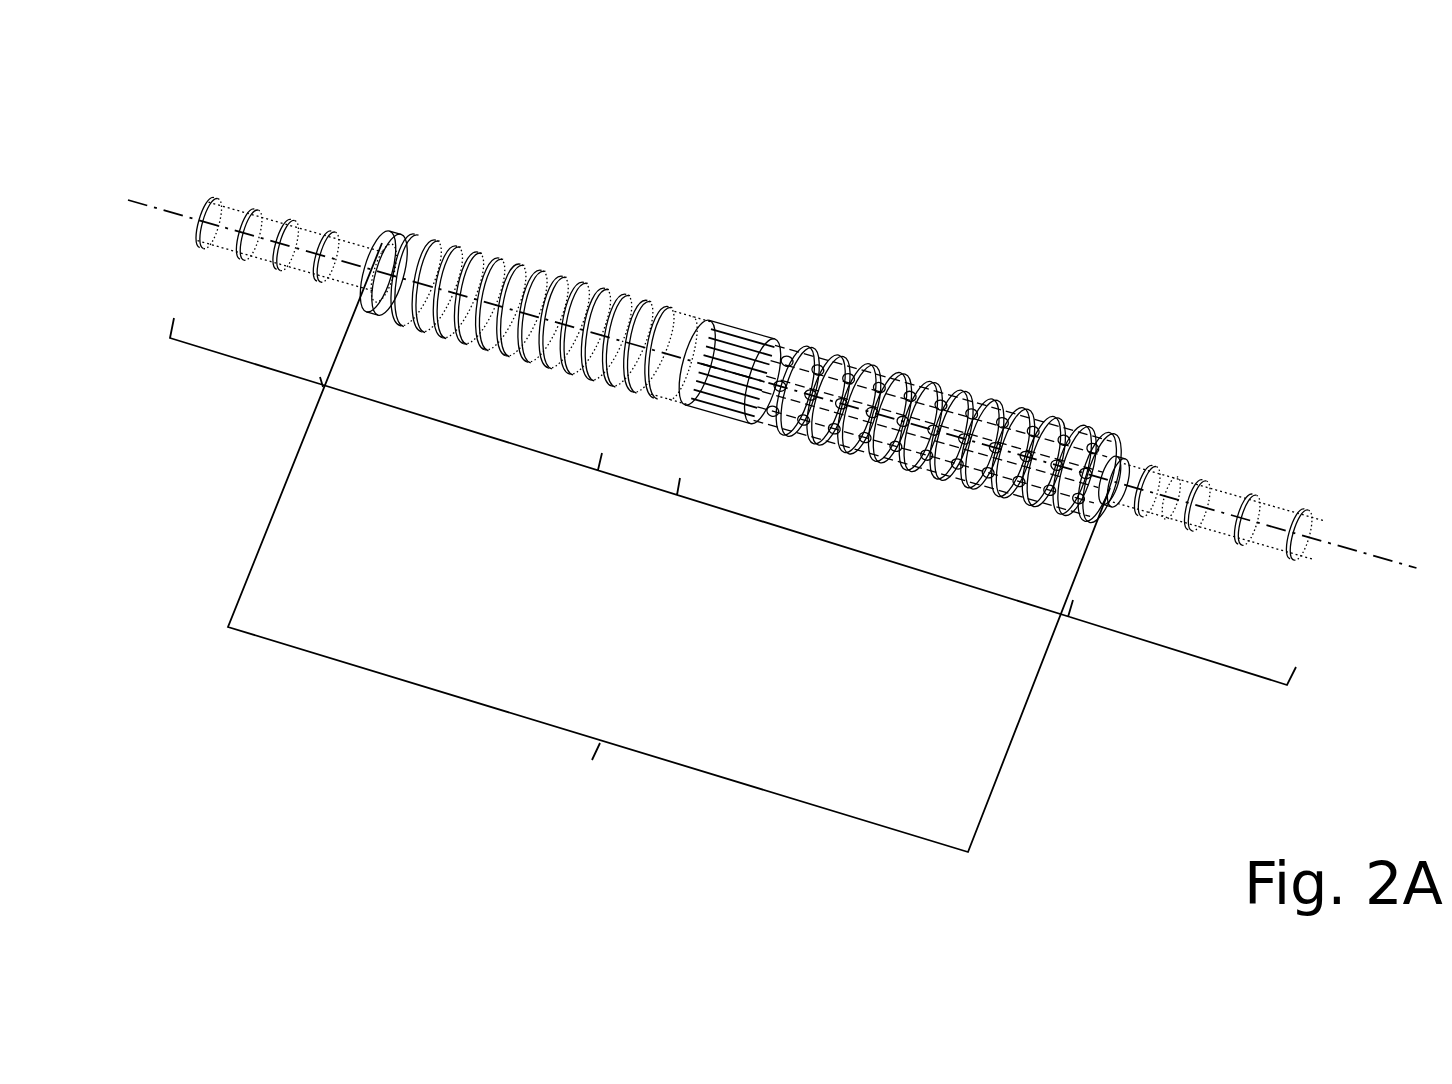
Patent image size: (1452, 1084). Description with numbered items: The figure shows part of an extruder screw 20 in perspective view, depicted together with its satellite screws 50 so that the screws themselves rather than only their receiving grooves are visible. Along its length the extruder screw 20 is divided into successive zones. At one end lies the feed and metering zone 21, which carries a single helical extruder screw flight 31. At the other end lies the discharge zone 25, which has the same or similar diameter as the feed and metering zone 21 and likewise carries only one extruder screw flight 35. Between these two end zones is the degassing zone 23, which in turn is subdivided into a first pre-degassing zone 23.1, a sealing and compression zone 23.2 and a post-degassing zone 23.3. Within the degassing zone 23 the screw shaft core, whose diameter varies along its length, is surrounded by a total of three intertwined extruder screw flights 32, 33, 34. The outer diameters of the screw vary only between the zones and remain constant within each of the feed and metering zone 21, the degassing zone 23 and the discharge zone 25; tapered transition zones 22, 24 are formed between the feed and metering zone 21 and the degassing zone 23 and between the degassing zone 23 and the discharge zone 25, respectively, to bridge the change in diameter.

The extruder screw 20 is at (1362, 166).
The feed and metering zone 21 is at (240, 358).
The tapered transition zone 22 is at (377, 247).
The degassing zone 23 is at (669, 547).
The first pre-degassing zone 23.1 is at (456, 428).
The sealing and compression zone 23.2 is at (632, 485).
The post-degassing zone 23.3 is at (870, 560).
The tapered transition zone 24 is at (1111, 463).
The discharge zone 25 is at (1177, 652).
The helical extruder screw flight 31 is at (287, 221).
The extruder screw flight 32 is at (595, 297).
The extruder screw flight 33 is at (618, 300).
The extruder screw flight 34 is at (640, 305).
The extruder screw flight 35 is at (1198, 477).
The satellite screws 50 is at (852, 380).